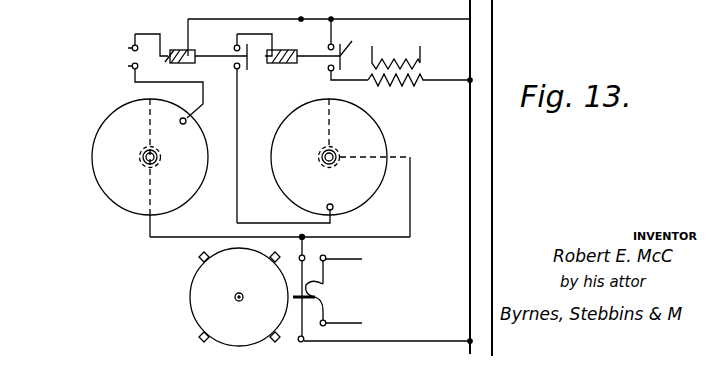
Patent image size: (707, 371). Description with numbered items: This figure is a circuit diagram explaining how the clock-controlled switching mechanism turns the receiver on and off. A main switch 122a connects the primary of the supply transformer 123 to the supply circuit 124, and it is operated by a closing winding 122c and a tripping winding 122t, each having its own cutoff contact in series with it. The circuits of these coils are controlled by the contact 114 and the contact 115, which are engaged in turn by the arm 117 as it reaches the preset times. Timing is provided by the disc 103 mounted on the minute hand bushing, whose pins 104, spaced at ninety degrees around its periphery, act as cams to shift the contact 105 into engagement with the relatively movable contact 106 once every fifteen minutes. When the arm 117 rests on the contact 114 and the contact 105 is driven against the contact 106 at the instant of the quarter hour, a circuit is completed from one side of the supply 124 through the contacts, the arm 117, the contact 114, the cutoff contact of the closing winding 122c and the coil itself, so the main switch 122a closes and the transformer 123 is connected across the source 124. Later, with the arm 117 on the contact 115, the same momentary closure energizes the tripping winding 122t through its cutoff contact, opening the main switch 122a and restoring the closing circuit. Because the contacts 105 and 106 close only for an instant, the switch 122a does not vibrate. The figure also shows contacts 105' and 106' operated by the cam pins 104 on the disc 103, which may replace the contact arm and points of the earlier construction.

The disc 103 is at (205, 296).
The pins 104 is at (292, 359).
The shiftable contact 105 is at (366, 289).
The contact 105' is at (340, 293).
The relatively movable contact 106 is at (336, 261).
The contact 106' is at (343, 294).
The contact 114 is at (181, 124).
The contact 115 is at (340, 199).
The arm 117 is at (150, 119).
The main switch 122a is at (337, 36).
The closing winding 122c is at (186, 64).
The tripping winding 122t is at (280, 64).
The supply transformer 123 is at (426, 64).
The circuit 124 is at (470, 41).